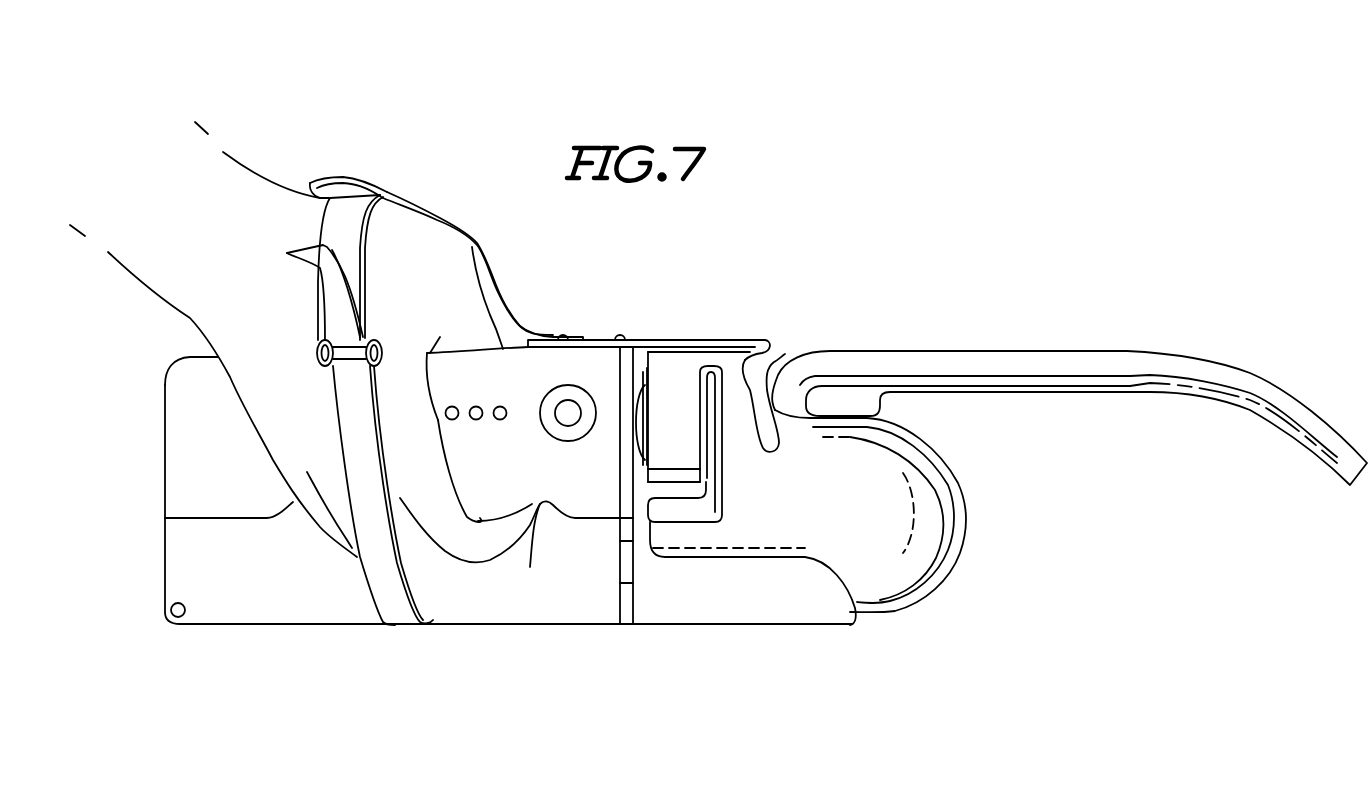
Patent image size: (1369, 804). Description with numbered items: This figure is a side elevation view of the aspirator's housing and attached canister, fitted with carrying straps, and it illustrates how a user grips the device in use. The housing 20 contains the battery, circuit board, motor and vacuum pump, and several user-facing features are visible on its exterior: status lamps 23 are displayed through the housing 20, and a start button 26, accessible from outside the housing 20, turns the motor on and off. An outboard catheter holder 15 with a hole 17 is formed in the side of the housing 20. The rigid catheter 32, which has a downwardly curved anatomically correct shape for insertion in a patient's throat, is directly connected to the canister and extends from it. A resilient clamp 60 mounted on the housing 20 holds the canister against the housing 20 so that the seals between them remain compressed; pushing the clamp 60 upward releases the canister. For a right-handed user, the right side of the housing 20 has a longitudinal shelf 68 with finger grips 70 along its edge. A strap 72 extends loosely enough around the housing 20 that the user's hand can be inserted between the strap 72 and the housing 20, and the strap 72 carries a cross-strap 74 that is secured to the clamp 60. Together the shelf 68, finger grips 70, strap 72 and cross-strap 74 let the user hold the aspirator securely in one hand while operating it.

The outboard catheter holder 15 is at (627, 617).
The hole 17 is at (633, 567).
The housing 20 is at (182, 437).
The status lamps 23 is at (453, 420).
The start button 26 is at (568, 412).
The catheter 32 is at (1193, 357).
The resilient clamp 60 is at (683, 343).
The longitudinal shelf 68 is at (610, 520).
The finger grips 70 is at (530, 567).
The strap 72 is at (374, 581).
The cross-strap 74 is at (510, 307).